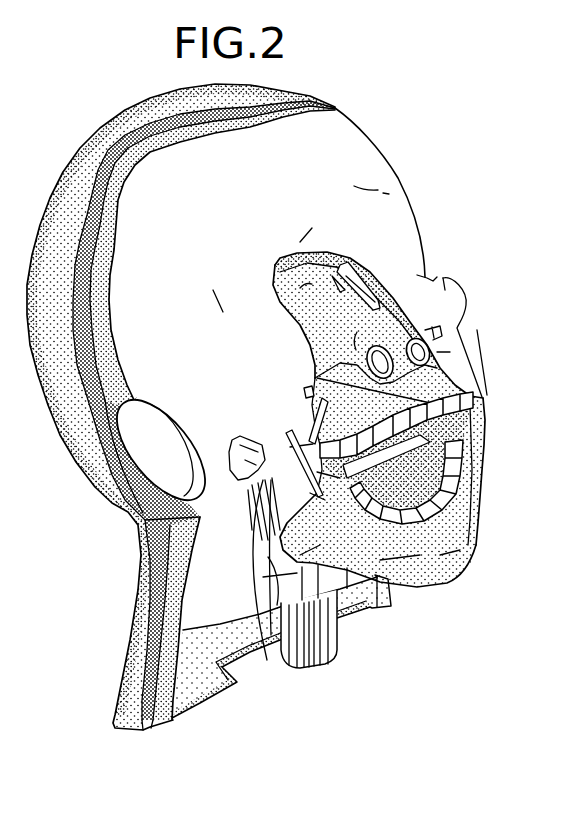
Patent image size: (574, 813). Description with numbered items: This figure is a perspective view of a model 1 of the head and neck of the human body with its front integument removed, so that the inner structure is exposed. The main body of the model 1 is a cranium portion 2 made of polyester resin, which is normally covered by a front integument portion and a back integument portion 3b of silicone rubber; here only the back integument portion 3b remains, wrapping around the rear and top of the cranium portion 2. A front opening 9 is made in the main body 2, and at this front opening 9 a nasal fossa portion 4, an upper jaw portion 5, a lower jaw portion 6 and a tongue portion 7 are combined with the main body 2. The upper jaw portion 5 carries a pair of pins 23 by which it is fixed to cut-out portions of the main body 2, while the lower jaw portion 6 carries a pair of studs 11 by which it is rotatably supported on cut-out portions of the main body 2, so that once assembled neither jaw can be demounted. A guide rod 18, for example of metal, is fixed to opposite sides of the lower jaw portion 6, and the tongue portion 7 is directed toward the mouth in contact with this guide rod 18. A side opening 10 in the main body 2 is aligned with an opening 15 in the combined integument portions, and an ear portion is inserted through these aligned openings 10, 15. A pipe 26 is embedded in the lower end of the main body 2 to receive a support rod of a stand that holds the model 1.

The model 1 is at (343, 101).
The cranium portion 2 is at (350, 150).
The back integument portion 3b is at (100, 140).
The nasal fossa portion 4 is at (345, 262).
The upper jaw portion 5 is at (430, 385).
The lower jaw portion 6 is at (447, 538).
The tongue portion 7 is at (466, 482).
The front opening 9 is at (279, 625).
The side opening 10 is at (158, 457).
The stud 11 is at (263, 437).
The opening 15 is at (105, 452).
The guide rod 18 is at (436, 430).
The pin 23 is at (308, 391).
The pipe 26 is at (325, 647).